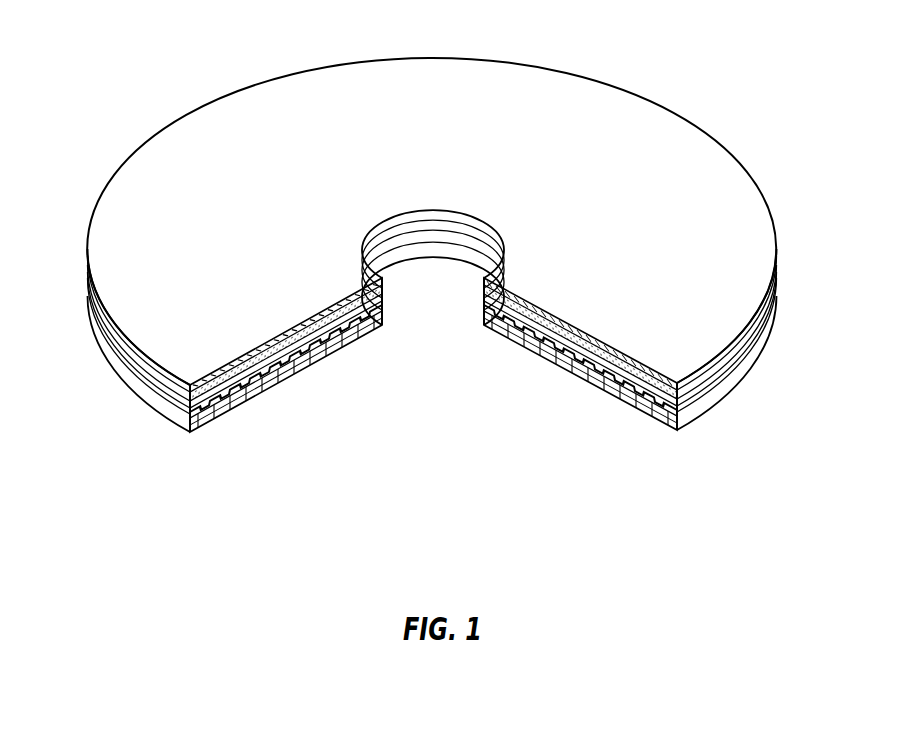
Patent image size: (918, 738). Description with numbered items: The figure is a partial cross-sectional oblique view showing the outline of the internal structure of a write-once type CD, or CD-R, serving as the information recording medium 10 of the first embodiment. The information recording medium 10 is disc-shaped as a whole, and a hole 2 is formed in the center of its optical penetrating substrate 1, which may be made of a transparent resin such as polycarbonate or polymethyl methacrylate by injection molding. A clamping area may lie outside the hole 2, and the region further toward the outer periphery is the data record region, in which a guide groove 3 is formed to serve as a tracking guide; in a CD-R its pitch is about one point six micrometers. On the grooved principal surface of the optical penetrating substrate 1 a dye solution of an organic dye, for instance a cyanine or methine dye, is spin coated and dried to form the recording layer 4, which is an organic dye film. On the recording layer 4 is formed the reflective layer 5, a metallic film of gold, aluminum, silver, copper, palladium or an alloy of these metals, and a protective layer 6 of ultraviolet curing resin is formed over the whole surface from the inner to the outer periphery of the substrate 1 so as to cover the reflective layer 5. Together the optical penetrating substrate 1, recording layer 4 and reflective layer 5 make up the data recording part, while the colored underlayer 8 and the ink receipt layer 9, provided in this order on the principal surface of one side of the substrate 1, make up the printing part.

The information recording medium 10 is at (154, 42).
The hole 2 is at (437, 248).
The ink receipt layer 9 is at (616, 360).
The colored underlayer 8 is at (678, 392).
The protective layer 6 is at (365, 315).
The reflective layer 5 is at (305, 345).
The recording layer 4 is at (268, 375).
The optical penetrating substrate 1 is at (225, 407).
The guide groove 3 is at (200, 416).